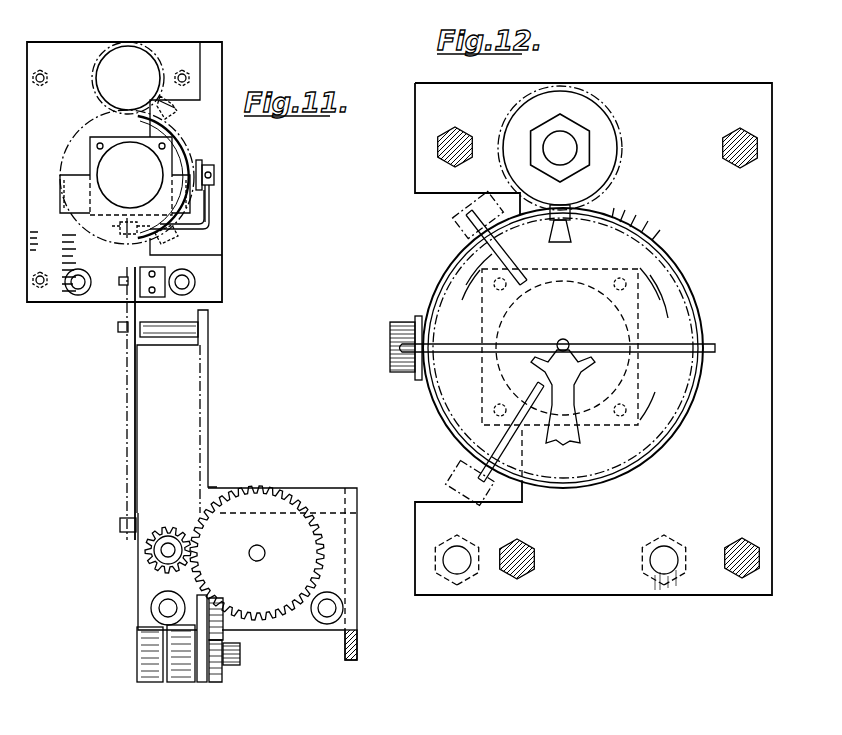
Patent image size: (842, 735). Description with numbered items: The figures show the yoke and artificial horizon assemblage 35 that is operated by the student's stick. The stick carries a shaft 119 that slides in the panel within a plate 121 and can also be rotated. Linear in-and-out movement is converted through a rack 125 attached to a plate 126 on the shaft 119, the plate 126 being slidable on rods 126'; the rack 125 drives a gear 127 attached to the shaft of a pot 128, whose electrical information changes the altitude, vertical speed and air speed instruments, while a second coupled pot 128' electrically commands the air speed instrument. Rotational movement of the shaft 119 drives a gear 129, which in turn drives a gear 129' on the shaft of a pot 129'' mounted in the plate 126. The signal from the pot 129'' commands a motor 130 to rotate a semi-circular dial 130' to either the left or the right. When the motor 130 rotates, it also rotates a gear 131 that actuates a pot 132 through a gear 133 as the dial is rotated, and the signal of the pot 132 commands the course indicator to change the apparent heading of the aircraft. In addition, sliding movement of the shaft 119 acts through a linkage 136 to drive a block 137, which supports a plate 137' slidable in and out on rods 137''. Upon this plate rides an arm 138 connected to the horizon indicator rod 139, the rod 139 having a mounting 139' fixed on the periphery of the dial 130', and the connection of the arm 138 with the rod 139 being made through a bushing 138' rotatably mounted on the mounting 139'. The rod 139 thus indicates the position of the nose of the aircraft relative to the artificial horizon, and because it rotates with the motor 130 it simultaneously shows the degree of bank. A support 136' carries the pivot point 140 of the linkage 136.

In FIG. 11, the yoke and artificial horizon assemblage 35 is at (326, 481).
In FIG. 11, the shaft 119 is at (262, 556).
In FIG. 11, the plate 121 is at (345, 500).
In FIG. 11, the rack 125 is at (226, 638).
In FIG. 11, the plate 126 is at (133, 571).
In FIG. 11, the rods 126' is at (240, 615).
In FIG. 11, the gear 127 is at (215, 670).
In FIG. 11, the pot 128 is at (161, 669).
In FIG. 11, the second coupled pot 128' is at (121, 654).
In FIG. 11, the gear 129 is at (257, 536).
In FIG. 11, the gear 129' is at (168, 525).
In FIG. 11, the pot 129'' is at (127, 554).
In FIG. 11, the motor 130 is at (125, 187).
In FIG. 12, the motor 130 is at (606, 347).
In FIG. 11, the semi-circular dial 130' is at (164, 144).
In FIG. 12, the semi-circular dial 130' is at (567, 348).
In FIG. 11, the gear 131 is at (200, 135).
In FIG. 12, the gear 131 is at (635, 222).
In FIG. 11, the pot 132 is at (113, 72).
In FIG. 11, the gear 133 is at (160, 58).
In FIG. 12, the gear 133 is at (600, 116).
In FIG. 11, the linkage 136 is at (109, 403).
In FIG. 11, the support 136' is at (200, 411).
In FIG. 11, the block 137 is at (126, 296).
In FIG. 11, the plate 137' is at (44, 284).
In FIG. 11, the rods 137'' is at (157, 297).
In FIG. 12, the rods 137'' is at (471, 579).
In FIG. 11, the arm 138 is at (221, 207).
In FIG. 11, the bushing 138' is at (246, 163).
In FIG. 12, the bushing 138' is at (383, 348).
In FIG. 12, the horizon indicator rod 139 is at (574, 392).
In FIG. 11, the mounting 139' is at (251, 193).
In FIG. 12, the mounting 139' is at (452, 348).
In FIG. 11, the pivot point 140 is at (120, 332).